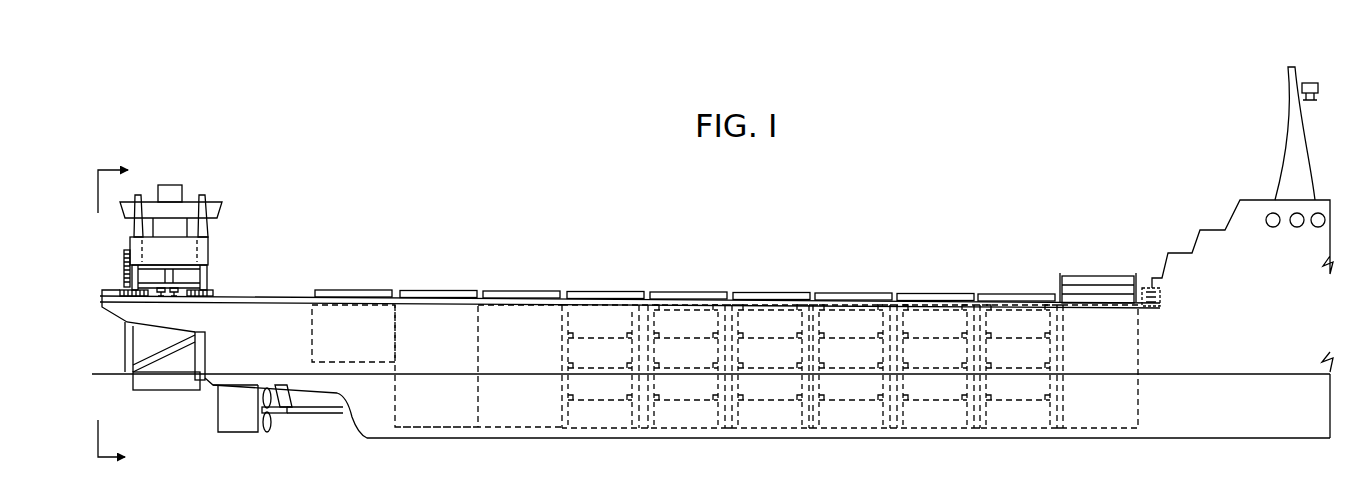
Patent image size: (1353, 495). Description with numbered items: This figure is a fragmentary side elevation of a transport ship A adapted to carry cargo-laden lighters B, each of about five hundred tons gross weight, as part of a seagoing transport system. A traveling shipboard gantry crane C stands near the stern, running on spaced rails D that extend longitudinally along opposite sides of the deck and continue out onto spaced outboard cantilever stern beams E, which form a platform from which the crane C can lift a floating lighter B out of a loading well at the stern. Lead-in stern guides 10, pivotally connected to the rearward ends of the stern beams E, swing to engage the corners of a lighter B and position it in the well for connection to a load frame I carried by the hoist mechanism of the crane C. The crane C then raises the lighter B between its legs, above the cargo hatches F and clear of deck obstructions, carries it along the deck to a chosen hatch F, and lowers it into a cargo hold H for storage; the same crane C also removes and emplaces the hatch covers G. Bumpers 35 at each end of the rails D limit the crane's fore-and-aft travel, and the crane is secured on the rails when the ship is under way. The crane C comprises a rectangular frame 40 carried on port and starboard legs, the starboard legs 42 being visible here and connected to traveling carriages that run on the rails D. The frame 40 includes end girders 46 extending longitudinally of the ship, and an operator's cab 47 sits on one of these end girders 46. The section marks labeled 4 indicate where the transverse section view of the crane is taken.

The transport ship A is at (830, 236).
The lighter B is at (760, 348).
The gantry crane C is at (243, 186).
The rails D is at (287, 296).
The cantilever stern beams E is at (166, 315).
The cargo hatches F is at (460, 290).
The hatch covers G is at (1068, 296).
The cargo hold H is at (348, 330).
The load frame I is at (150, 331).
The section line 4- 4 is at (113, 317).
The lead-in stern guides 10 is at (125, 345).
The bumpers 35 is at (123, 286).
The rectangular frame 40 is at (223, 205).
The starboard legs 42 is at (135, 268).
The end girders 46 is at (165, 208).
The operator's cab 47 is at (180, 190).